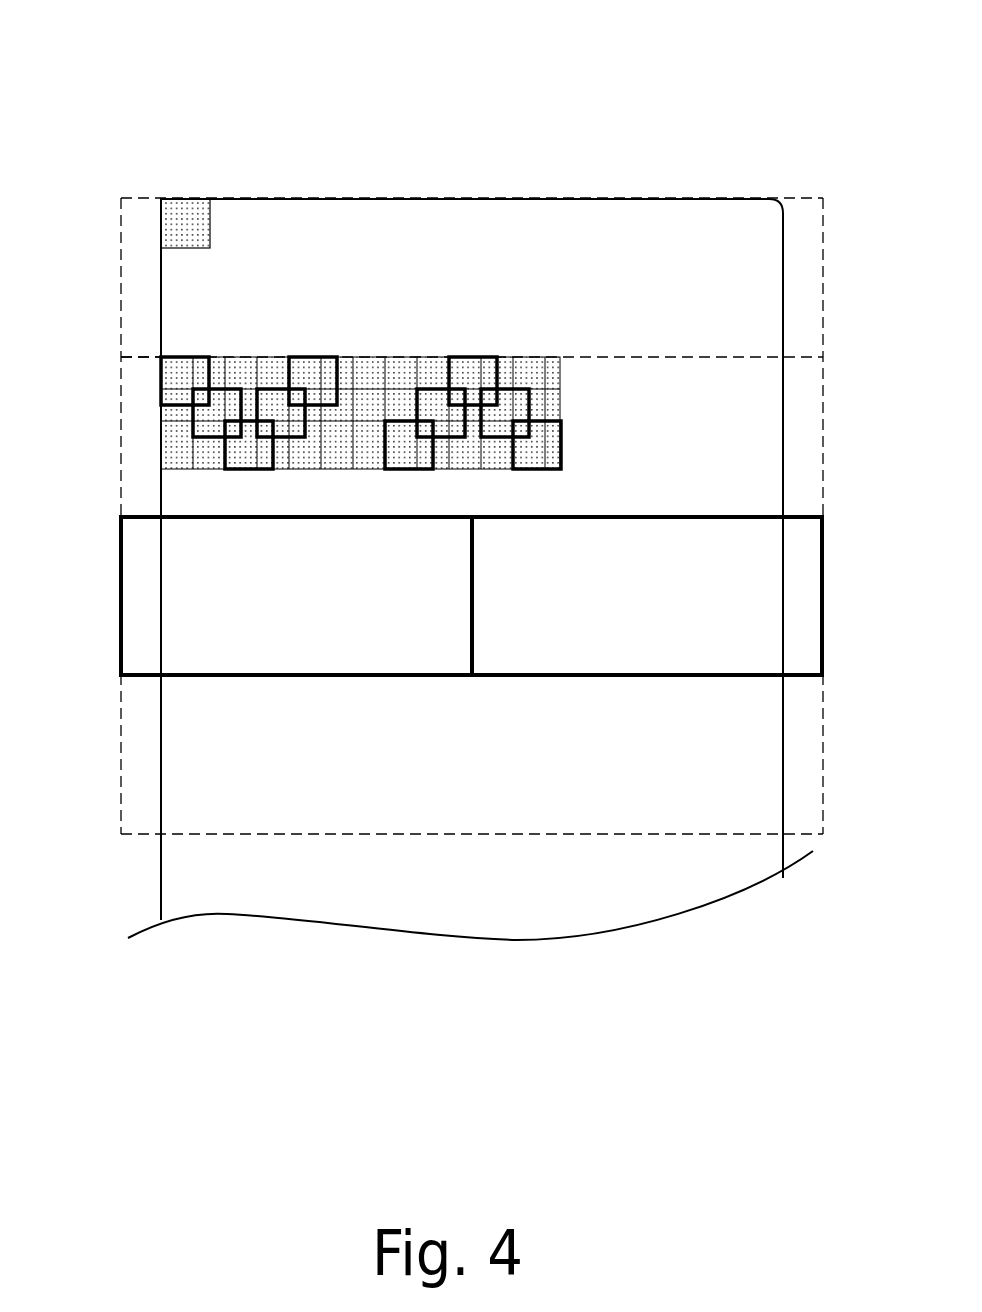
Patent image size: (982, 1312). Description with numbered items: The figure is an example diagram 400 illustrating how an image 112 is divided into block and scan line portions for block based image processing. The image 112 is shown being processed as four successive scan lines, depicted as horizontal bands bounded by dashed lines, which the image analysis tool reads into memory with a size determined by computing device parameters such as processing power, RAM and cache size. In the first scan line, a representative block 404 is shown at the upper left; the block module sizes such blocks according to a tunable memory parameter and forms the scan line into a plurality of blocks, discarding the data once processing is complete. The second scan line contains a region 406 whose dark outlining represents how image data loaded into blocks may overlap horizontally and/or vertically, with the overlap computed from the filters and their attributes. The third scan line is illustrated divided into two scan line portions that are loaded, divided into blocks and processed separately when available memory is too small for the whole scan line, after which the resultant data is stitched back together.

The diagram 400 is at (744, 62).
The image 112 is at (454, 163).
The block 404 is at (185, 198).
The region 406 is at (368, 405).